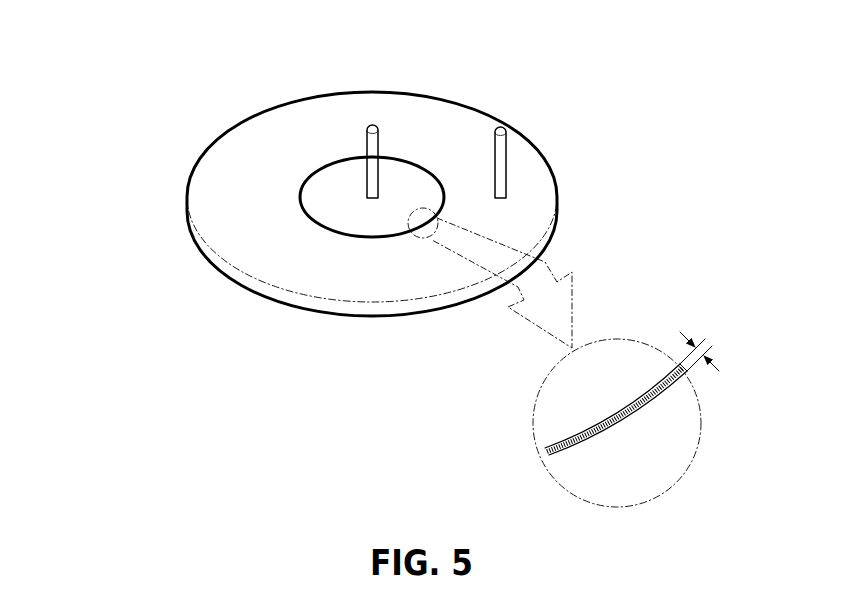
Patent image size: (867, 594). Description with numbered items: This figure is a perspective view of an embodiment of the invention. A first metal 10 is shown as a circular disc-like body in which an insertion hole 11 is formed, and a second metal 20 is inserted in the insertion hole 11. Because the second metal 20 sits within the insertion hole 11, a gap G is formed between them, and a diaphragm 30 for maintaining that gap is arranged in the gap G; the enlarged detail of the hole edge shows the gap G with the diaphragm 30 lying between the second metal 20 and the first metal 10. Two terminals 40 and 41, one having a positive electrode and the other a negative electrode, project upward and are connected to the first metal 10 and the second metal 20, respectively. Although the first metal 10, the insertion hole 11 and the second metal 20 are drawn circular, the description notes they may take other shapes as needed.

The first metal 10 is at (190, 157).
The insertion hole 11 is at (633, 415).
The second metal 20 is at (398, 170).
The diaphragm 30 is at (544, 452).
The terminal 40 is at (503, 157).
The terminal 41 is at (367, 133).
The gap G is at (711, 344).